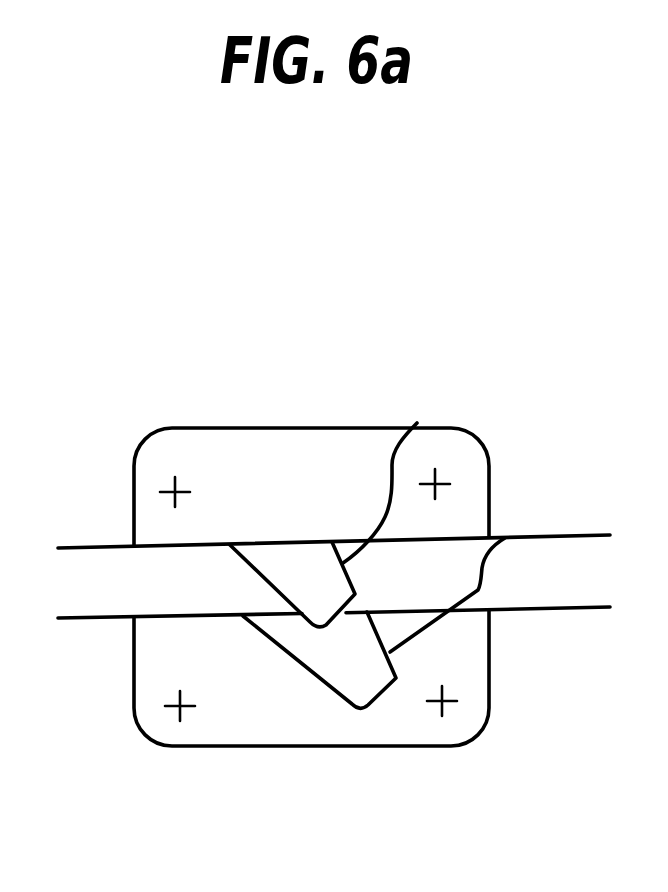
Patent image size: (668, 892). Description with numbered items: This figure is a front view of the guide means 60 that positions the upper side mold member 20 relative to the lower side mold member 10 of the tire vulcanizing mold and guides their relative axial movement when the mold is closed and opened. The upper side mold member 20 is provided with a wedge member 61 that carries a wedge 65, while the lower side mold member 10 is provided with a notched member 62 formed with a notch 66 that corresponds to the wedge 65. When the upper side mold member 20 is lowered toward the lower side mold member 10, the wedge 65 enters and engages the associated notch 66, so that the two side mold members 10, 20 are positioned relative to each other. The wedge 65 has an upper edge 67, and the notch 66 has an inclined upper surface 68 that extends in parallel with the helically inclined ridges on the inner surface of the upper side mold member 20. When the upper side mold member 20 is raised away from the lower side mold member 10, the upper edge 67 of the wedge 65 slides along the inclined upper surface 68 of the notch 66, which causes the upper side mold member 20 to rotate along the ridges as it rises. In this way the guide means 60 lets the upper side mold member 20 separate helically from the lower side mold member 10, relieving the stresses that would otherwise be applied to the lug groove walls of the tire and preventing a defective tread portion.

The lower side mold member 10 is at (560, 653).
The upper side mold member 20 is at (545, 456).
The guide means 60 is at (190, 400).
The wedge member 61 is at (360, 455).
The notched member 62 is at (475, 720).
The wedge 65 is at (292, 573).
The notch 66 is at (335, 665).
The upper edge 67 is at (417, 423).
The inclined upper surface 68 is at (505, 538).